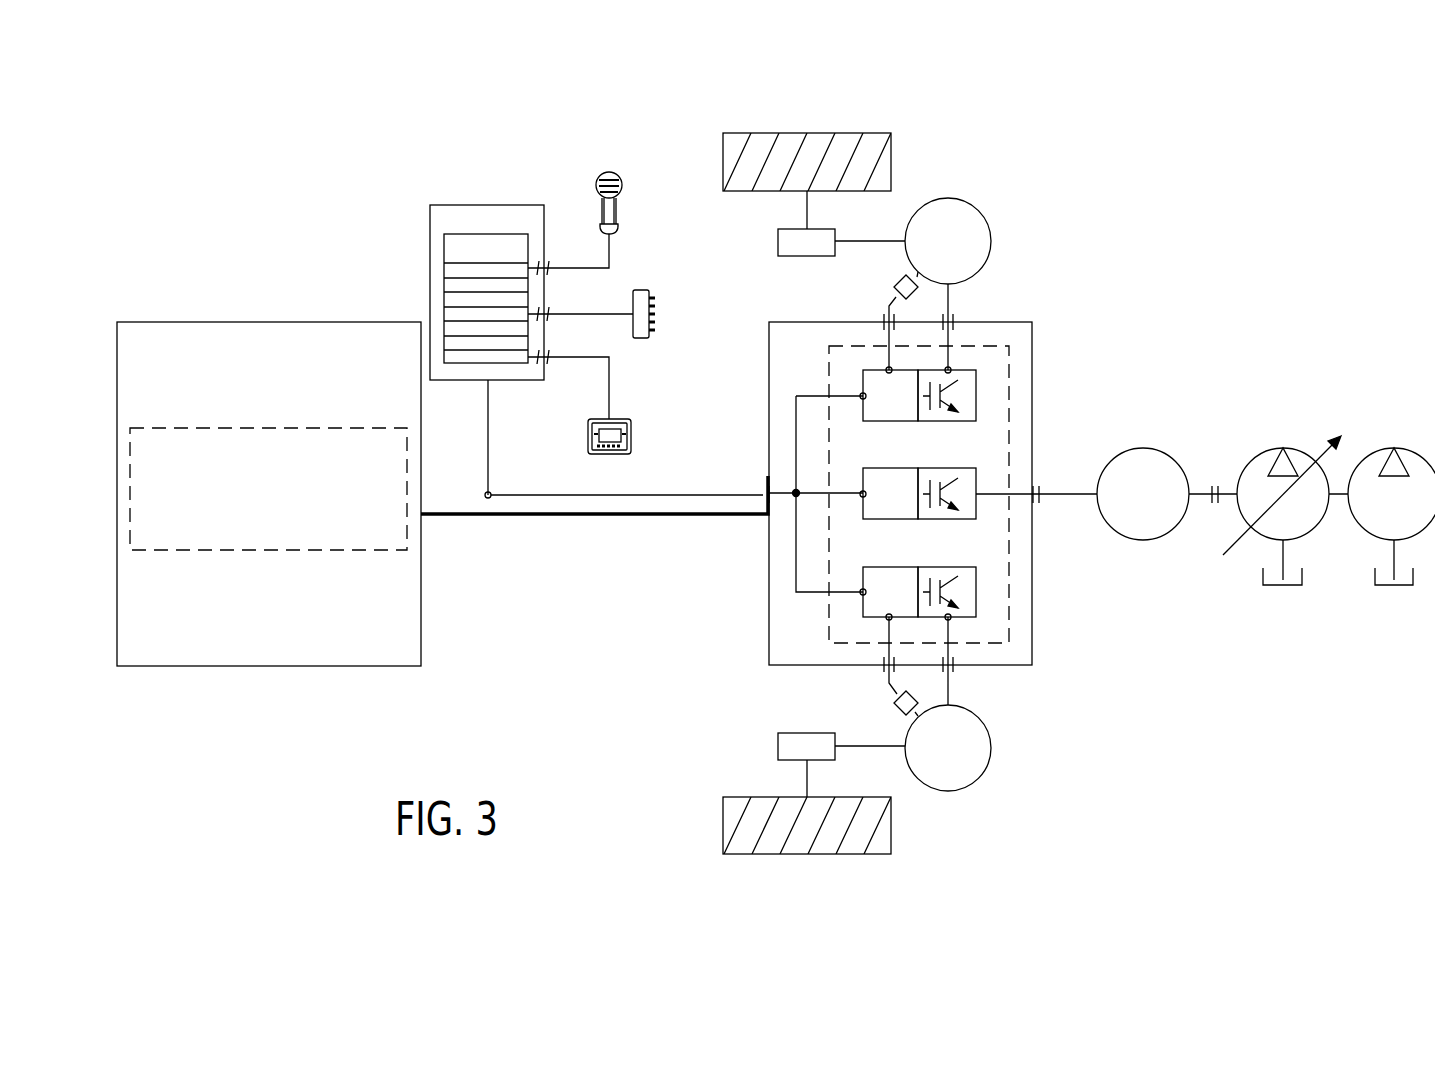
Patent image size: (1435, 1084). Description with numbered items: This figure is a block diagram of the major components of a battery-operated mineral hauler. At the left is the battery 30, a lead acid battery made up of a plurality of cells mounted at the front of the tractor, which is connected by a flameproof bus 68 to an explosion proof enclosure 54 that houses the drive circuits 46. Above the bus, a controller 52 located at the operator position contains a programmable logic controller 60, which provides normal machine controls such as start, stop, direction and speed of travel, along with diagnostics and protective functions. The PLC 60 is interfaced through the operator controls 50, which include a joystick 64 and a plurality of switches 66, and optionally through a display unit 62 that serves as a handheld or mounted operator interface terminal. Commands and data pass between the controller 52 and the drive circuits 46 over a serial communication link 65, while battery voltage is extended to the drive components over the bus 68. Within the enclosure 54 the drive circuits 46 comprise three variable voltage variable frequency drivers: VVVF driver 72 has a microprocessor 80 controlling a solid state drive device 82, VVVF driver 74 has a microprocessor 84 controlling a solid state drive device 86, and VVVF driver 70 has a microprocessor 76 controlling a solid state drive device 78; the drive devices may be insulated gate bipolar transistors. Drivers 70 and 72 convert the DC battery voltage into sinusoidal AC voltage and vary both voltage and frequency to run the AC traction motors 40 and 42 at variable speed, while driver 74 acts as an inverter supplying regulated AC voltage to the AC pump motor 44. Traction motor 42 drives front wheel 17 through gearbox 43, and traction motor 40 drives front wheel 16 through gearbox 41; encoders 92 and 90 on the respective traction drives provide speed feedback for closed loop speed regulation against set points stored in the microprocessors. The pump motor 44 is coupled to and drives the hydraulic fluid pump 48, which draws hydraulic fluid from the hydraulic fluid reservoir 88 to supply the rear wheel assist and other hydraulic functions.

The front wheel 16 is at (808, 846).
The front wheel 17 is at (848, 138).
The battery 30 is at (190, 320).
The AC traction motor 40 is at (990, 733).
The gearbox 41 is at (778, 746).
The AC traction motor 42 is at (975, 202).
The gearbox 43 is at (778, 247).
The AC pump motor 44 is at (1165, 537).
The drive circuits 46 is at (803, 352).
The hydraulic fluid pump 48 is at (1260, 450).
The operator controls 50 is at (634, 254).
The controller 52 is at (457, 190).
The explosion proof enclosure 54 is at (1020, 318).
The programmable logic controller 60 is at (430, 232).
The display unit 62 is at (632, 437).
The joystick 64 is at (601, 204).
The serial communication link 65 is at (543, 503).
The switches 66 is at (646, 340).
The bus 68 is at (548, 515).
The VVVF driver 70 is at (925, 567).
The VVVF driver 72 is at (913, 421).
The VVVF driver 74 is at (930, 468).
The microprocessor 76 is at (862, 607).
The solid state drive device 78 is at (976, 590).
The microprocessor 80 is at (887, 369).
The solid state drive device 82 is at (976, 388).
The microprocessor 84 is at (861, 518).
The solid state drive device 86 is at (976, 485).
The hydraulic fluid reservoir 88 is at (1375, 578).
The encoder 90 is at (897, 708).
The encoder 92 is at (897, 283).